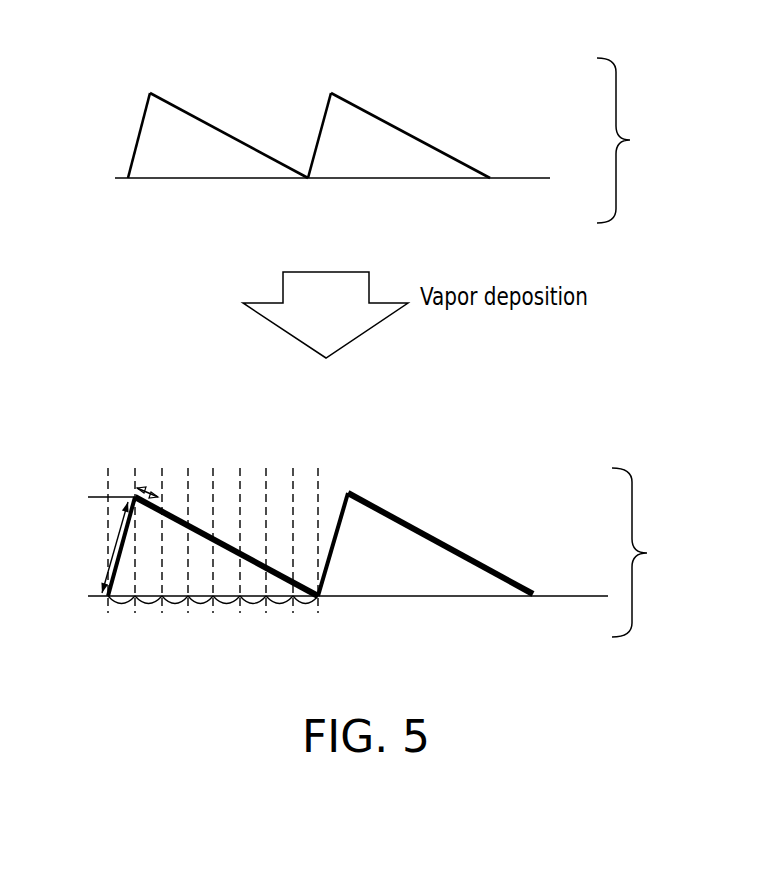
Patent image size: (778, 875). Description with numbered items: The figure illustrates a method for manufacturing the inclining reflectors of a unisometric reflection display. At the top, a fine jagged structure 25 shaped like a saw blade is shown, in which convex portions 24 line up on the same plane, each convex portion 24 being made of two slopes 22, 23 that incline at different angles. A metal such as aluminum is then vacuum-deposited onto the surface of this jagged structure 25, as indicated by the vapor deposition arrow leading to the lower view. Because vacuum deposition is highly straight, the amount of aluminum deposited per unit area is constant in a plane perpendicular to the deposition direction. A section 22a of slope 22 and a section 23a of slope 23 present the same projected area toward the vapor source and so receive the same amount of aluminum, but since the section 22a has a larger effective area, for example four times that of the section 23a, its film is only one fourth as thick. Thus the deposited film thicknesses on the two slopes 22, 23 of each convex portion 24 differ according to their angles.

The slope 22 is at (140, 130).
The section of slope 22 22a is at (120, 528).
The slope 23 is at (215, 126).
The section of slope 23 23a is at (146, 489).
The convex portion 24 is at (170, 165).
The fine jagged structure 25 is at (641, 347).